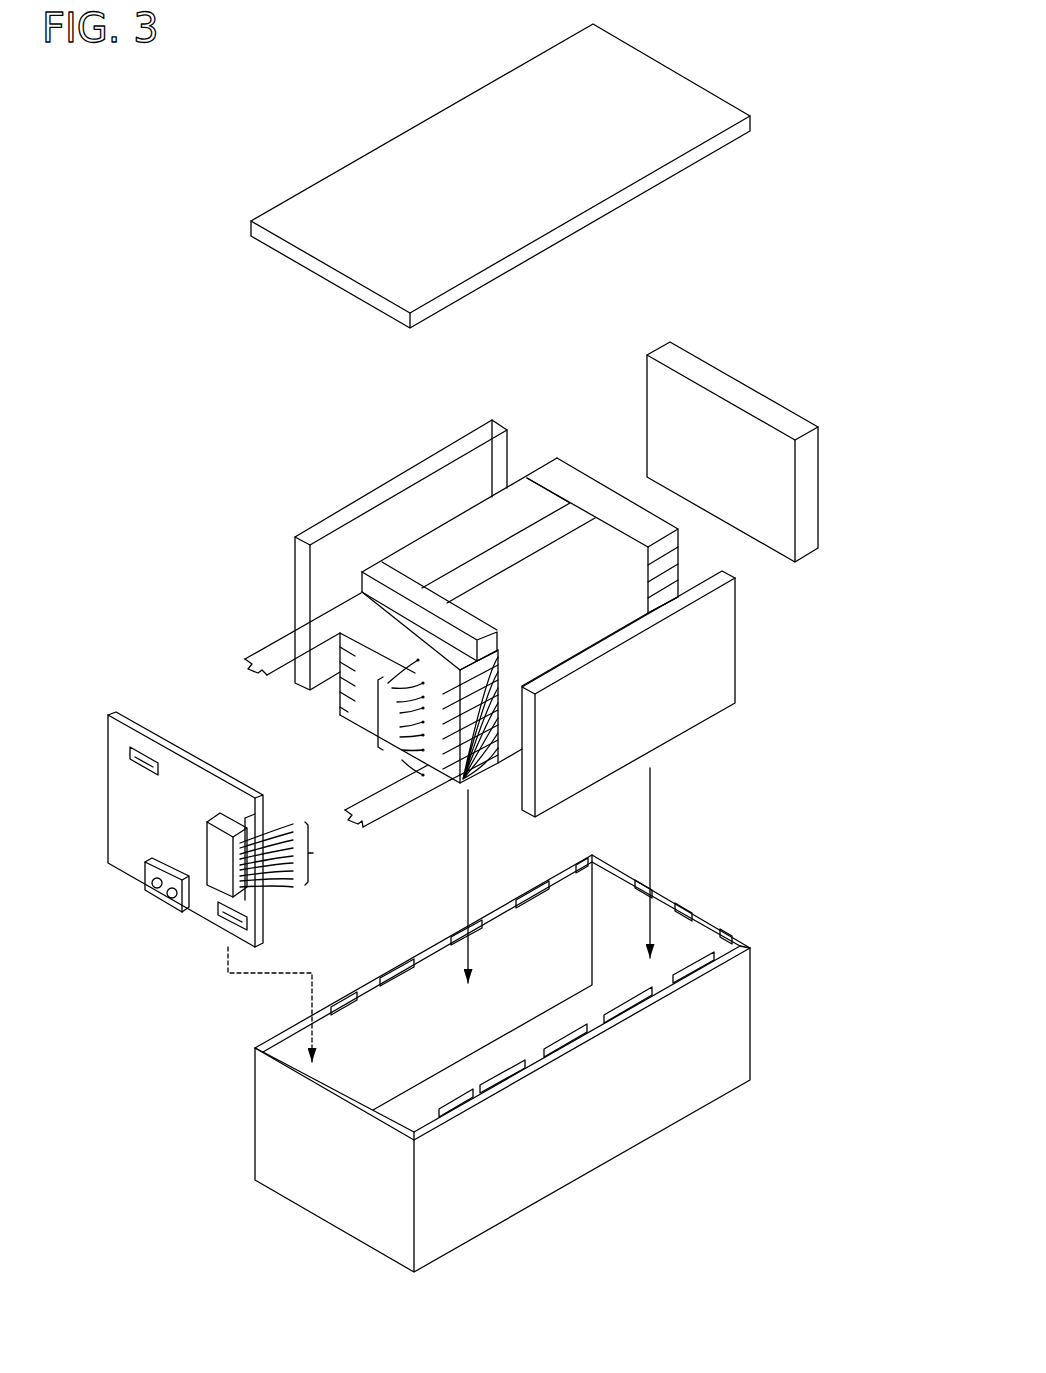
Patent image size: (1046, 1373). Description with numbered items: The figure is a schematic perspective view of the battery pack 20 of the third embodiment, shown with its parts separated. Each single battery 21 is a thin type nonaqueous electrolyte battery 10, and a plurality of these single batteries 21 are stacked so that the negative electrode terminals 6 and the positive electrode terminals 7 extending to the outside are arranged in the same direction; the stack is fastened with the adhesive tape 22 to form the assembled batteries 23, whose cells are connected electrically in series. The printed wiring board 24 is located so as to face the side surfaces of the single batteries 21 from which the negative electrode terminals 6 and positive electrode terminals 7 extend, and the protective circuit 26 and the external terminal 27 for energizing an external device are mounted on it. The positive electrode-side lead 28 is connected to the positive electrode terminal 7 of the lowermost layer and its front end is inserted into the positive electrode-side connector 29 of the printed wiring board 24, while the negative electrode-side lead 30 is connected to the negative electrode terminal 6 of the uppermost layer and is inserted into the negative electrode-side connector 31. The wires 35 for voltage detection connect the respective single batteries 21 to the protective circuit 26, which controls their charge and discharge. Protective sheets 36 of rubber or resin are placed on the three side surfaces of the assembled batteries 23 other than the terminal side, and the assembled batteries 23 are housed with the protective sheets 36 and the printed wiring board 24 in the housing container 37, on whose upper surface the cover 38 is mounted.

The battery pack 20 is at (183, 332).
The cover 38 is at (690, 107).
The protective sheet 36 is at (361, 508).
The assembled batteries 23 is at (460, 525).
The negative electrode terminal 6 is at (358, 590).
The positive electrode terminal 7 is at (430, 670).
The adhesive tape 22 is at (585, 550).
The single battery 21 is at (752, 578).
The thin type nonaqueous electrolyte battery 10 is at (680, 589).
The negative electrode-side lead 30 is at (268, 647).
The positive electrode-side lead 28 is at (385, 816).
The wires for voltage detection 35 is at (378, 713).
The printed wiring board 24 is at (147, 722).
The negative electrode-side connector 31 is at (150, 750).
The positive electrode-side connector 29 is at (257, 930).
The protective circuit 26 is at (212, 828).
The external terminal 27 is at (167, 898).
The housing container 37 is at (738, 1020).